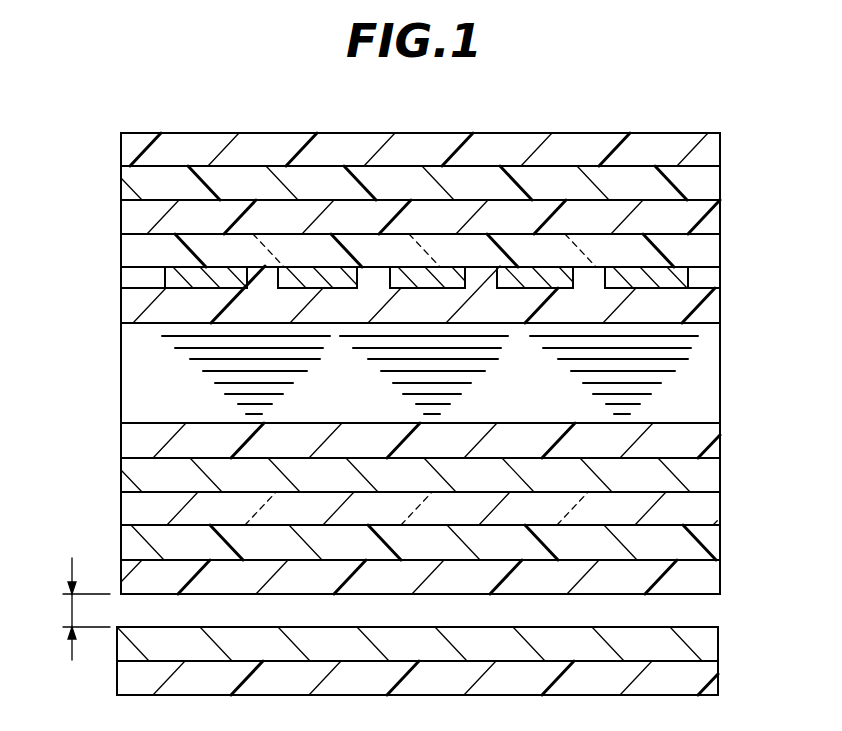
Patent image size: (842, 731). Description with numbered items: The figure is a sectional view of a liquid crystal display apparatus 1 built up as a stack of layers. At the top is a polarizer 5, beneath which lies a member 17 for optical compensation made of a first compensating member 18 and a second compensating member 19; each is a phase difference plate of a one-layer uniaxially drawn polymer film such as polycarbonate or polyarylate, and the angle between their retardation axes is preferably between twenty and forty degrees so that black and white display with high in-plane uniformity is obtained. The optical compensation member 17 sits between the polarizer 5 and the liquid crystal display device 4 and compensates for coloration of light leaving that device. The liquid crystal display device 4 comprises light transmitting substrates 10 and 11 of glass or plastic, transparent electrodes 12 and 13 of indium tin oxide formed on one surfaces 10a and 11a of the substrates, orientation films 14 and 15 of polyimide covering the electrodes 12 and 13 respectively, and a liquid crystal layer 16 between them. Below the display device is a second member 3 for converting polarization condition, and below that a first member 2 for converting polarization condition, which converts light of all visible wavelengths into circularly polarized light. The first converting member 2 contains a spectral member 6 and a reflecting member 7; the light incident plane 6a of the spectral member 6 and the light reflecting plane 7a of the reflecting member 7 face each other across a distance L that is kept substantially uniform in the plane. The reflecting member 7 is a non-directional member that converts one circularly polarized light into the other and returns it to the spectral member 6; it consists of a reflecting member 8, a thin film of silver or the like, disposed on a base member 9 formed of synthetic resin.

The liquid crystal display apparatus 1 is at (670, 125).
The first member for converting polarization condition 2 is at (787, 560).
The second member for converting polarization condition 3 is at (708, 541).
The liquid crystal display device 4 is at (733, 234).
The polarizer 5 is at (710, 148).
The spectral member 6 is at (707, 574).
The light incident plane 6a is at (470, 595).
The reflecting member 7 is at (760, 622).
The light reflecting plane 7a is at (315, 625).
The reflecting member 8 is at (707, 641).
The base member 9 is at (707, 675).
The light transmitting substrate 10 is at (132, 505).
The one surface of substrate 10a is at (367, 490).
The light transmitting substrate 11 is at (138, 251).
The one surface of substrate 11a is at (480, 269).
The transparent electrode 12 is at (130, 470).
The transparent electrode 13 is at (175, 278).
The orientation film 14 is at (132, 440).
The orientation film 15 is at (132, 295).
The liquid crystal layer 16 is at (137, 365).
The member for optical compensation 17 is at (778, 165).
The first compensating member 18 is at (708, 180).
The second compensating member 19 is at (710, 212).
The distance L is at (72, 610).